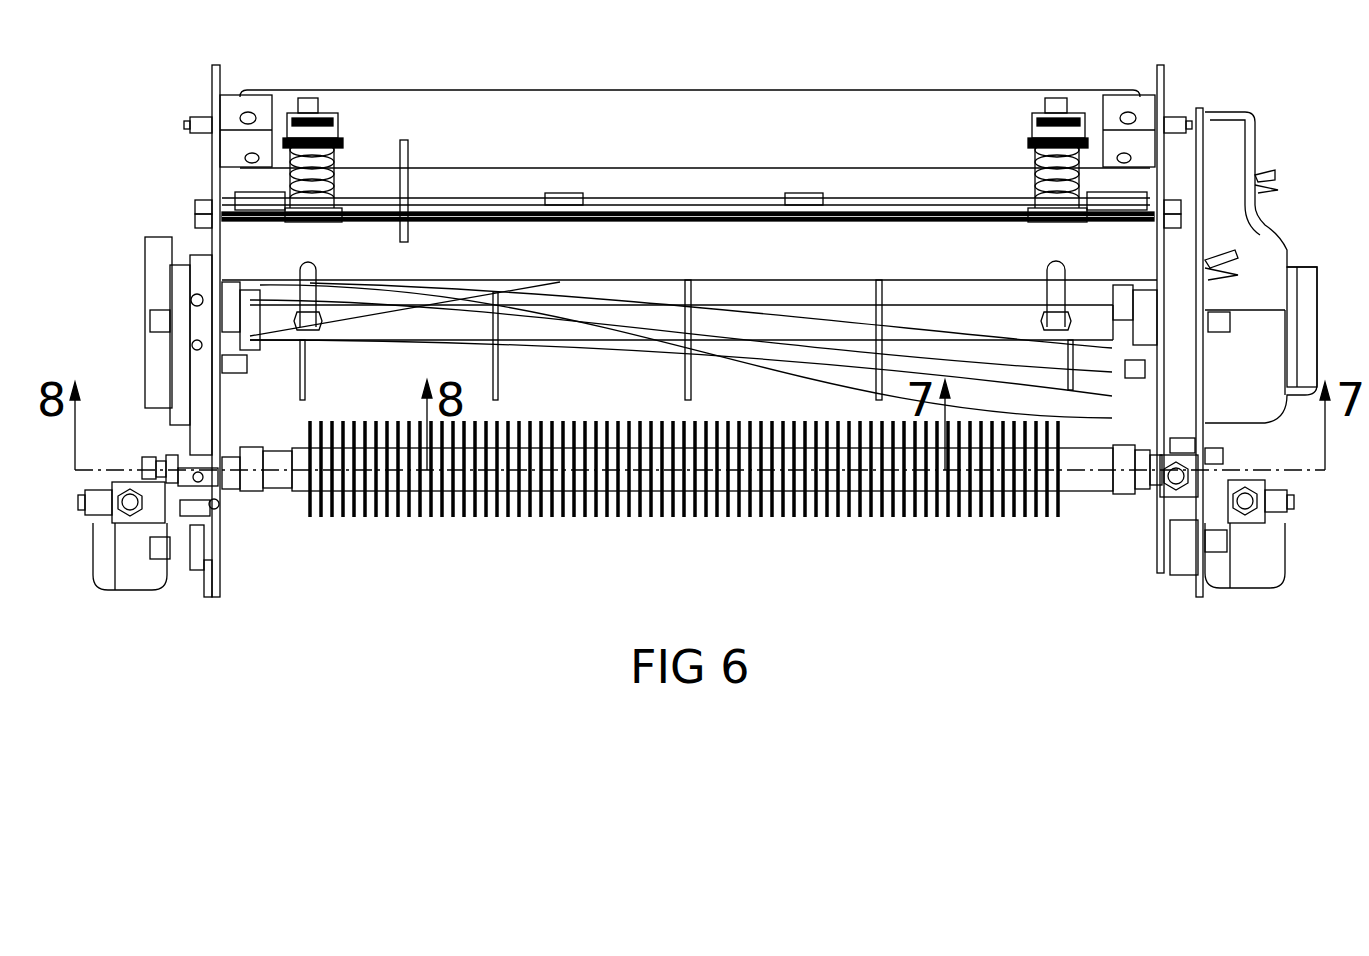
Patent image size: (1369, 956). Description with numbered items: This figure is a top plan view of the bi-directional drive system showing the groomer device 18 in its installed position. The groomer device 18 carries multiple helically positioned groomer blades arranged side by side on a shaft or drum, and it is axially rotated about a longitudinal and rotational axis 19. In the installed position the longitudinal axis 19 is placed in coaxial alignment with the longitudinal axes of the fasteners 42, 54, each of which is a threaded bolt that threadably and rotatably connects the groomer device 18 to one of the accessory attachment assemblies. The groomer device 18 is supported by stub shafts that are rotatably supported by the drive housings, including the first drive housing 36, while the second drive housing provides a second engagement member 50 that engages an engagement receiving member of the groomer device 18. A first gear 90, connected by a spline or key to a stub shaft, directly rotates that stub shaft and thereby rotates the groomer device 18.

The groomer device 18 is at (400, 520).
The longitudinal and rotational axis 19 is at (285, 518).
The first drive housing 36 is at (222, 500).
The fastener 42 is at (140, 462).
The second engagement member 50 is at (1148, 500).
The fastener 54 is at (1222, 458).
The first gear 90 is at (1218, 500).